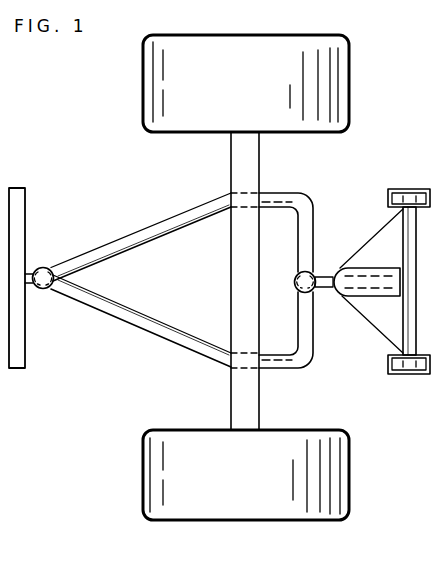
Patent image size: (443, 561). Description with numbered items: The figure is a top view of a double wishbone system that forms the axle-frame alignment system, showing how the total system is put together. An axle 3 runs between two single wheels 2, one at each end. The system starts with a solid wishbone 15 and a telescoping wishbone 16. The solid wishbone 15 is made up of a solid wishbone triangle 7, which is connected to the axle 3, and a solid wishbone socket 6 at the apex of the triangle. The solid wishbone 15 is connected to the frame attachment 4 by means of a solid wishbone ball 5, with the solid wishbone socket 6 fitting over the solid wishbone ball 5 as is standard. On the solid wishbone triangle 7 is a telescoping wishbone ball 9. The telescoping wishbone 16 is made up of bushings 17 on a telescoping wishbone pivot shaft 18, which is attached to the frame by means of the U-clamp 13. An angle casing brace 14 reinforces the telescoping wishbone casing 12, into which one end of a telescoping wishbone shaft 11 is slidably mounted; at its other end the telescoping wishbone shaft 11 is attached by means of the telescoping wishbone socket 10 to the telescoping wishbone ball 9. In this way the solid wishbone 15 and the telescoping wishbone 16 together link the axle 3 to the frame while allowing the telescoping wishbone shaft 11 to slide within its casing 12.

The single wheel 2 is at (143, 82).
The axle 3 is at (259, 150).
The frame attachment 4 is at (26, 208).
The solid wishbone ball 5 is at (46, 291).
The solid wishbone socket 6 is at (43, 267).
The solid wishbone triangle 7 is at (127, 232).
The telescoping wishbone ball 9 is at (315, 294).
The telescoping wishbone socket 10 is at (300, 272).
The telescoping wishbone shaft 11 is at (329, 276).
The telescoping wishbone casing 12 is at (363, 299).
The U-clamp 13 is at (424, 189).
The angle casing brace 14 is at (392, 325).
The solid wishbone 15 is at (124, 334).
The telescoping wishbone 16 is at (358, 249).
The bushings 17 is at (390, 189).
The telescoping wishbone pivot shaft 18 is at (403, 346).